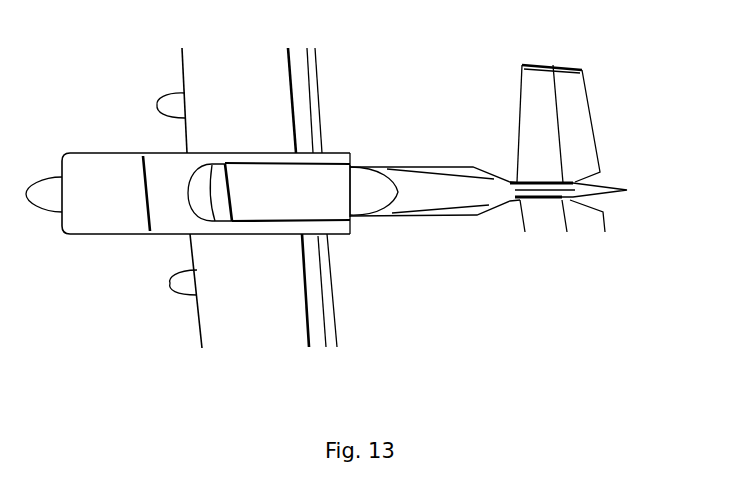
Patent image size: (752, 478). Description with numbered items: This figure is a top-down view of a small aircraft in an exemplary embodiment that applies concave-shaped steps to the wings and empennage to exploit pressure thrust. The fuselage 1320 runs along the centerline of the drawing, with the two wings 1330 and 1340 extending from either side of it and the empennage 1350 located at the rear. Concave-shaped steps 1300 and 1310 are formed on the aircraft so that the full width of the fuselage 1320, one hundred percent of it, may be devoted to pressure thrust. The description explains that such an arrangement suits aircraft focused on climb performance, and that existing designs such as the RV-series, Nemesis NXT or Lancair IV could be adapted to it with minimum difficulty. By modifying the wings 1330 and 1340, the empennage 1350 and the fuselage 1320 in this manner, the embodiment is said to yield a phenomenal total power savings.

The concave-shaped step 1300 is at (352, 237).
The concave-shaped step 1310 is at (469, 223).
The fuselage 1320 is at (418, 187).
The wing 1330 is at (275, 82).
The wing 1340 is at (274, 332).
The empennage 1350 is at (600, 185).